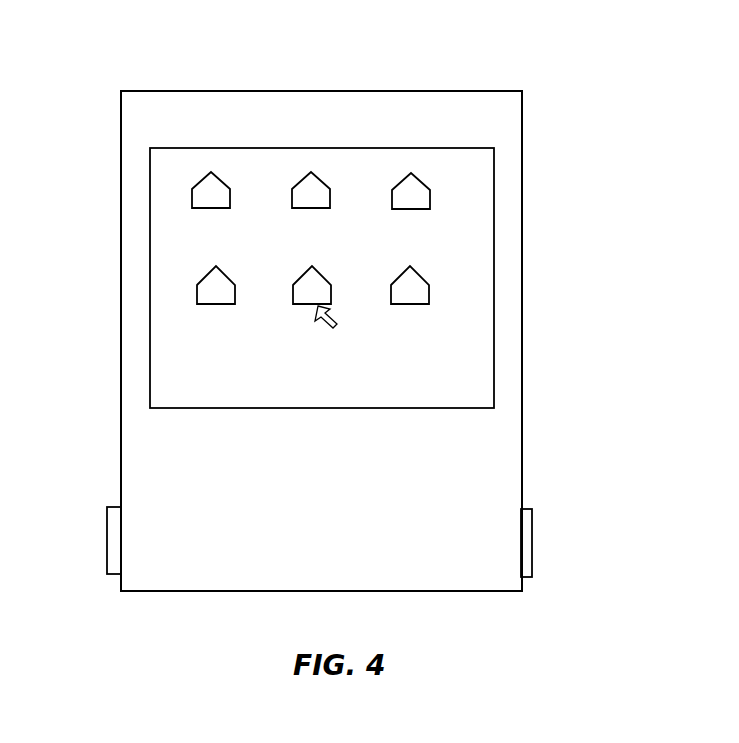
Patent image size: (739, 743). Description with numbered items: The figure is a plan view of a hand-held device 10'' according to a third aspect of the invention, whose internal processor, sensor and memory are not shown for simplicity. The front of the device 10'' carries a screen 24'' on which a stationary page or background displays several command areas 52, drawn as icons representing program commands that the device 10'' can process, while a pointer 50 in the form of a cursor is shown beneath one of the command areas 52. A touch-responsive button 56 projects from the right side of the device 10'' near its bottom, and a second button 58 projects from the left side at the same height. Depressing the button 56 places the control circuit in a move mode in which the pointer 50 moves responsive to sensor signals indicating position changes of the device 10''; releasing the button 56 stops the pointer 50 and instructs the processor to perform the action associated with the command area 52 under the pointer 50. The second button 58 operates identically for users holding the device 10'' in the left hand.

The device 10'' is at (321, 308).
The screen 24'' is at (381, 278).
The command areas 52 is at (311, 192).
The pointer 50 is at (322, 320).
The touch-responsive button 56 is at (533, 537).
The second button 58 is at (107, 535).